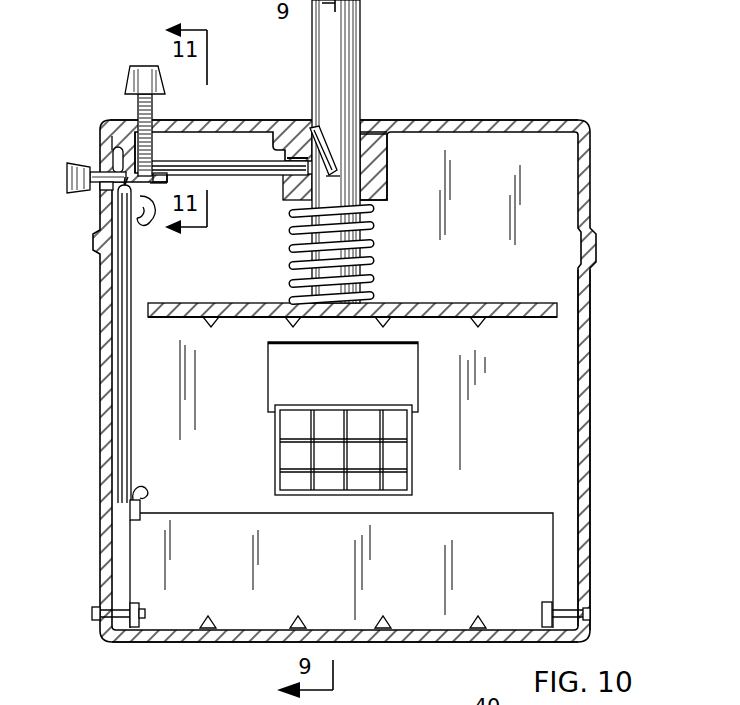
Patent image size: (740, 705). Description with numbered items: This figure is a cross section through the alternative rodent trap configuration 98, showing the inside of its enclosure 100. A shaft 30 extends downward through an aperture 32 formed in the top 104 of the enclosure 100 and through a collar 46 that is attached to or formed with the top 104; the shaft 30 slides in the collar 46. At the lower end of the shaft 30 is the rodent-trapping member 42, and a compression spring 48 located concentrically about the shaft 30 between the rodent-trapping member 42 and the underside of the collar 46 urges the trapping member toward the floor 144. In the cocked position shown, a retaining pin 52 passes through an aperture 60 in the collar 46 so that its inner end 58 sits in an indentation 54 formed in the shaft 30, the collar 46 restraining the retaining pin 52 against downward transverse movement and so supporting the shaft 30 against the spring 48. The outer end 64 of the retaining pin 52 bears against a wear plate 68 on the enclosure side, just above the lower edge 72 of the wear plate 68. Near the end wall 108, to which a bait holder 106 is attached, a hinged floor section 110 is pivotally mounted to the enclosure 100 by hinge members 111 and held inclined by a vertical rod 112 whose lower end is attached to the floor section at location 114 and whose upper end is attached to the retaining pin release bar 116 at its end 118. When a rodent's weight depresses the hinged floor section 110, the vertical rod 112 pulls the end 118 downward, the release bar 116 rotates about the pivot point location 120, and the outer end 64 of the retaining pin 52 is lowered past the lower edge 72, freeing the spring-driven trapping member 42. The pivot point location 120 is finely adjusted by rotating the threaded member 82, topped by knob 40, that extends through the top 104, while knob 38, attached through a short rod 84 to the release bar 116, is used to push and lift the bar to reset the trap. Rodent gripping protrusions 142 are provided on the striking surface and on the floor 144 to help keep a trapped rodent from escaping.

The shaft 30 is at (351, 75).
The aperture 32 is at (367, 121).
The knob 38 is at (77, 180).
The knob 40 is at (143, 69).
The rodent-trapping member 42 is at (462, 308).
The collar 46 is at (378, 170).
The compression spring 48 is at (370, 245).
The retaining pin 52 is at (236, 174).
The indentation 54 is at (336, 176).
The inner end of retaining pin 58 is at (314, 152).
The aperture in collar 60 is at (289, 159).
The outer end of retaining pin 64 is at (127, 163).
The wear plate 68 is at (110, 145).
The lower edge of wear plate 72 is at (112, 163).
The threaded member 82 is at (139, 104).
The short rod 84 is at (100, 188).
The rodent trap alternative configuration 98 is at (606, 171).
The enclosure 100 is at (581, 410).
The top of enclosure 104 is at (517, 124).
The bait holder 106 is at (276, 437).
The end wall 108 is at (562, 453).
The hinged floor section 110 is at (488, 521).
The hinge members 111 is at (112, 607).
The vertical rod 112 is at (124, 461).
The attachment location 114 is at (141, 512).
The retaining pin release bar 116 is at (165, 185).
The end of release bar 118 is at (147, 206).
The pivot point location 120 is at (151, 167).
The rodent gripping protrusions 142 is at (481, 320).
The floor 144 is at (238, 642).